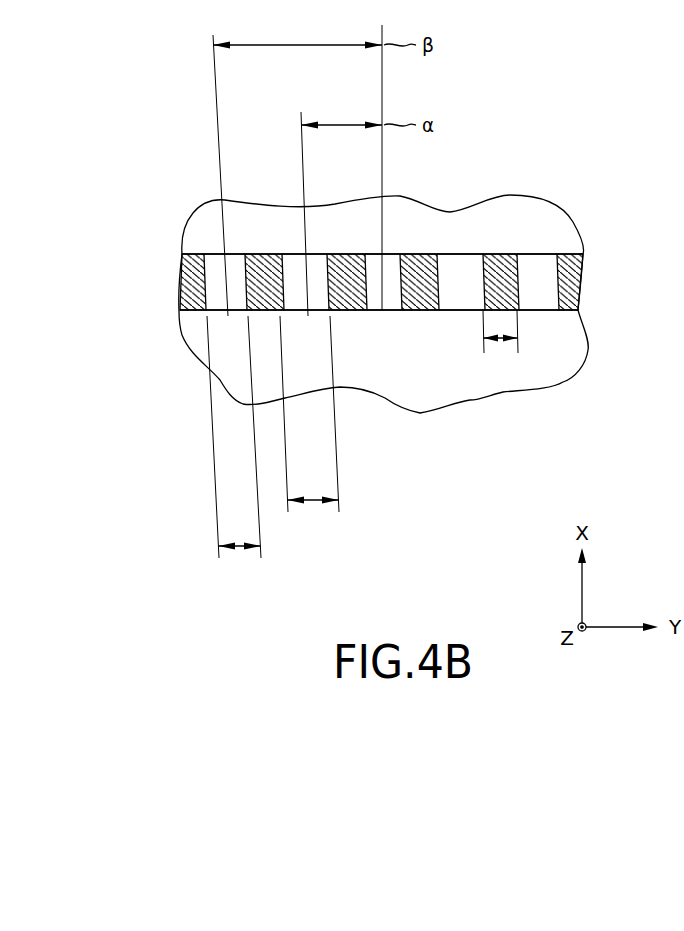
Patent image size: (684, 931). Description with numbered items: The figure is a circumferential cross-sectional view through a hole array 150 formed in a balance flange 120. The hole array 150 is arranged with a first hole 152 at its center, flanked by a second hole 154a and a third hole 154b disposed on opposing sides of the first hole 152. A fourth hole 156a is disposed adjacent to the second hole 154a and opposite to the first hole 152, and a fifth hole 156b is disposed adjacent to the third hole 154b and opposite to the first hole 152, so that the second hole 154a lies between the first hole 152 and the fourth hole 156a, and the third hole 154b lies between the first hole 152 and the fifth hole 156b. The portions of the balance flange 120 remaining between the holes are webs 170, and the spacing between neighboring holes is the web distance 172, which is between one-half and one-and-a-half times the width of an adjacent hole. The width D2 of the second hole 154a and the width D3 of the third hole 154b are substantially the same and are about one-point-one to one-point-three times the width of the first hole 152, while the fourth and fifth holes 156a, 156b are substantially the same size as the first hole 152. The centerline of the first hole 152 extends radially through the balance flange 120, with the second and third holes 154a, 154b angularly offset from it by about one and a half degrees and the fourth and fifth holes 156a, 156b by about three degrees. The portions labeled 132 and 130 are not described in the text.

The hole array 150 is at (187, 192).
The first end fin 132 is at (192, 255).
The lower body / substrate 130 is at (188, 320).
The balance flange 120 is at (573, 278).
The web 170 is at (503, 260).
The fourth hole 156a is at (230, 273).
The second hole 154a is at (317, 303).
The first hole 152 is at (390, 303).
The third hole 154b is at (458, 258).
The fifth hole 156b is at (550, 265).
The web distance 172 is at (500, 345).
The width of second hole D2 is at (312, 507).
The width of third hole D3 is at (240, 548).